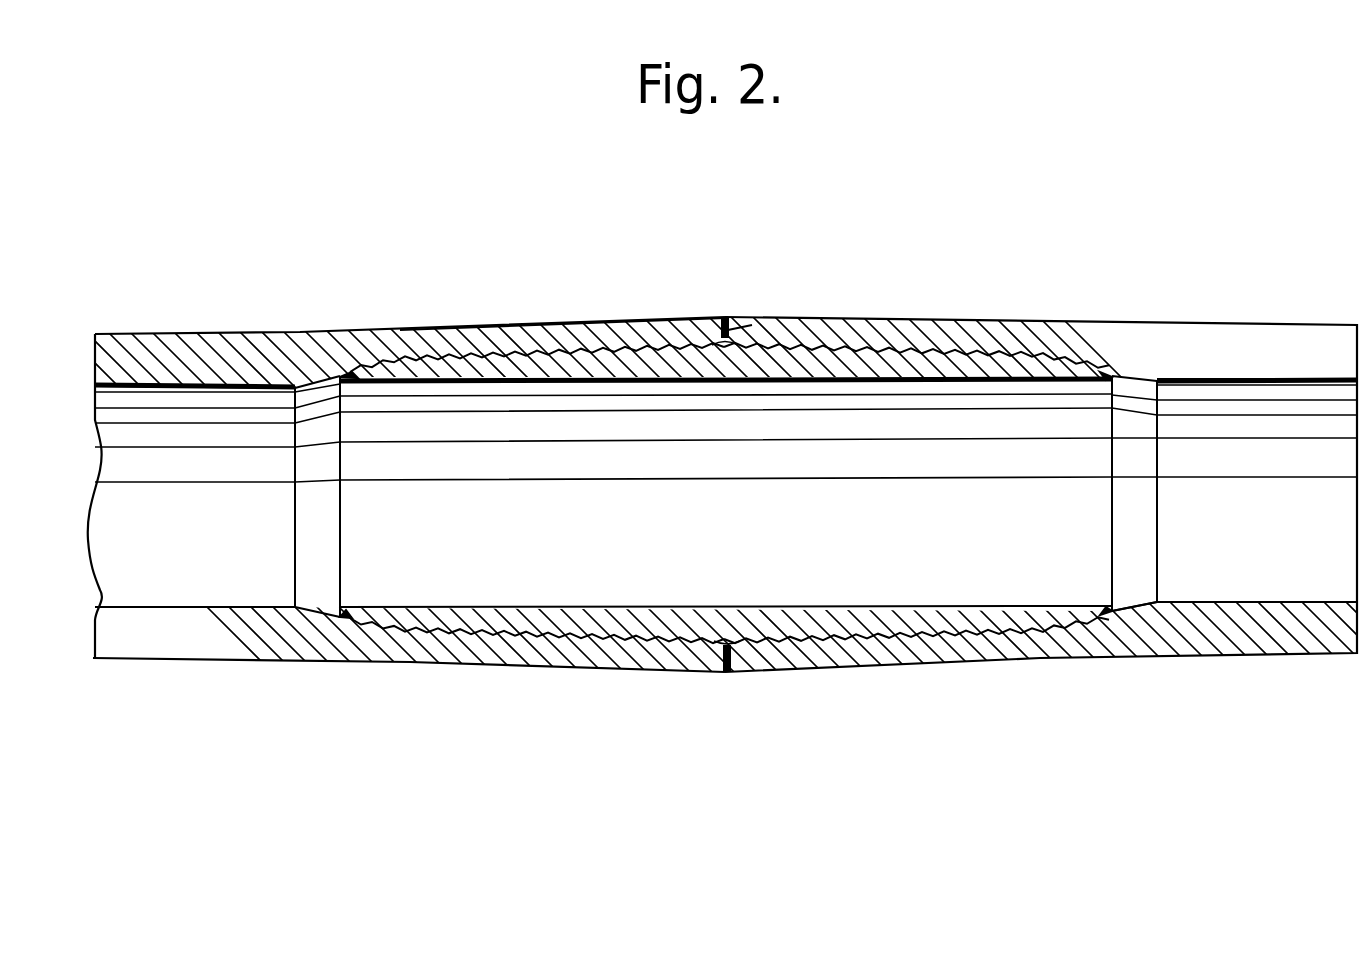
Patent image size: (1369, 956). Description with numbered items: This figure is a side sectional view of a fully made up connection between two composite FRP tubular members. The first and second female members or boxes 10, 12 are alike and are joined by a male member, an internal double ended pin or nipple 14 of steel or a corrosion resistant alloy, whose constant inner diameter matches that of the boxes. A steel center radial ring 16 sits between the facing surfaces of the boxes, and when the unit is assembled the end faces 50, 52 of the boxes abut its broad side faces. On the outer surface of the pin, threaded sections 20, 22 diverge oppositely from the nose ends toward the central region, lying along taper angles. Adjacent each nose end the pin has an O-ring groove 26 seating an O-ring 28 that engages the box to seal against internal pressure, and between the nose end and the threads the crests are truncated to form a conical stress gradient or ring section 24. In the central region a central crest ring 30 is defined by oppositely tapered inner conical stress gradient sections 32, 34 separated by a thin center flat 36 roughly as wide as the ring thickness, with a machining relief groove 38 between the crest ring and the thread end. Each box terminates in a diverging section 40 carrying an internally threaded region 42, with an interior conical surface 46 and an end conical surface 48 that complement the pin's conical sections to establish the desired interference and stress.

The first female member or box 10 is at (363, 330).
The second female member or box 12 is at (1065, 324).
The internal double ended pin or nipple 14 is at (690, 340).
The center radial ring 16 is at (725, 333).
The threaded section 20 is at (548, 384).
The threaded section 22 is at (950, 355).
The conical stress gradient or ring section 24 is at (1088, 620).
The O-ring groove 26 is at (1105, 610).
The O-ring 28 is at (1105, 618).
The central crest ring 30 is at (733, 643).
The inner conical stress gradient or ring section 32 is at (727, 643).
The inner conical stress gradient or ring section 34 is at (762, 643).
The center flat 36 is at (729, 647).
The machining relief groove 38 is at (681, 633).
The diverging section 40 is at (489, 331).
The internally threaded region 42 is at (568, 355).
The interior conical surface 46 is at (711, 343).
The end conical surface 48 is at (368, 386).
The end face 50 is at (723, 333).
The end face 52 is at (730, 328).